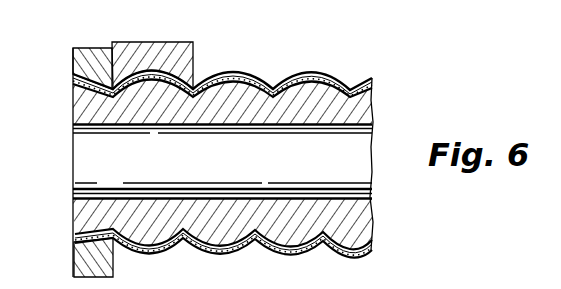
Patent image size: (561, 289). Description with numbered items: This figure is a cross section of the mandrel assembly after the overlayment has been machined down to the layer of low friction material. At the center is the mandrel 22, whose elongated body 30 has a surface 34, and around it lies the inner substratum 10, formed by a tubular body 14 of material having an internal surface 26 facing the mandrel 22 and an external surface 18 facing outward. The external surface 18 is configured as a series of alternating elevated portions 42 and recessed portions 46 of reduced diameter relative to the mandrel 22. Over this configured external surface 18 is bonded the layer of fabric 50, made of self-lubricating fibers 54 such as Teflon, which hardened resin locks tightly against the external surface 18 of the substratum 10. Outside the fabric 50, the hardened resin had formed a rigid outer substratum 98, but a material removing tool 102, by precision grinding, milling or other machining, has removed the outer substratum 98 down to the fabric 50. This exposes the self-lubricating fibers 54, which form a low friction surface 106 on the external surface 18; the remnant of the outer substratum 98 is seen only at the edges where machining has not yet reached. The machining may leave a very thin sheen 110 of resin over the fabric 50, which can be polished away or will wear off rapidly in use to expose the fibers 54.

The substratum 10 is at (85, 212).
The body 14 is at (345, 117).
The external surface 18 is at (77, 76).
The mandrel 22 is at (84, 165).
The internal surface 26 is at (114, 128).
The elongated body 30 is at (205, 165).
The surface 34 is at (90, 125).
The elevated portions 42 is at (231, 75).
The recessed portions 46 is at (198, 84).
The fabric 50 is at (372, 79).
The fibers 54 is at (260, 77).
The outer substratum 98 is at (90, 48).
The material removing tool 102 is at (152, 48).
The low friction surface 106 is at (318, 253).
The sheen 110 is at (340, 61).